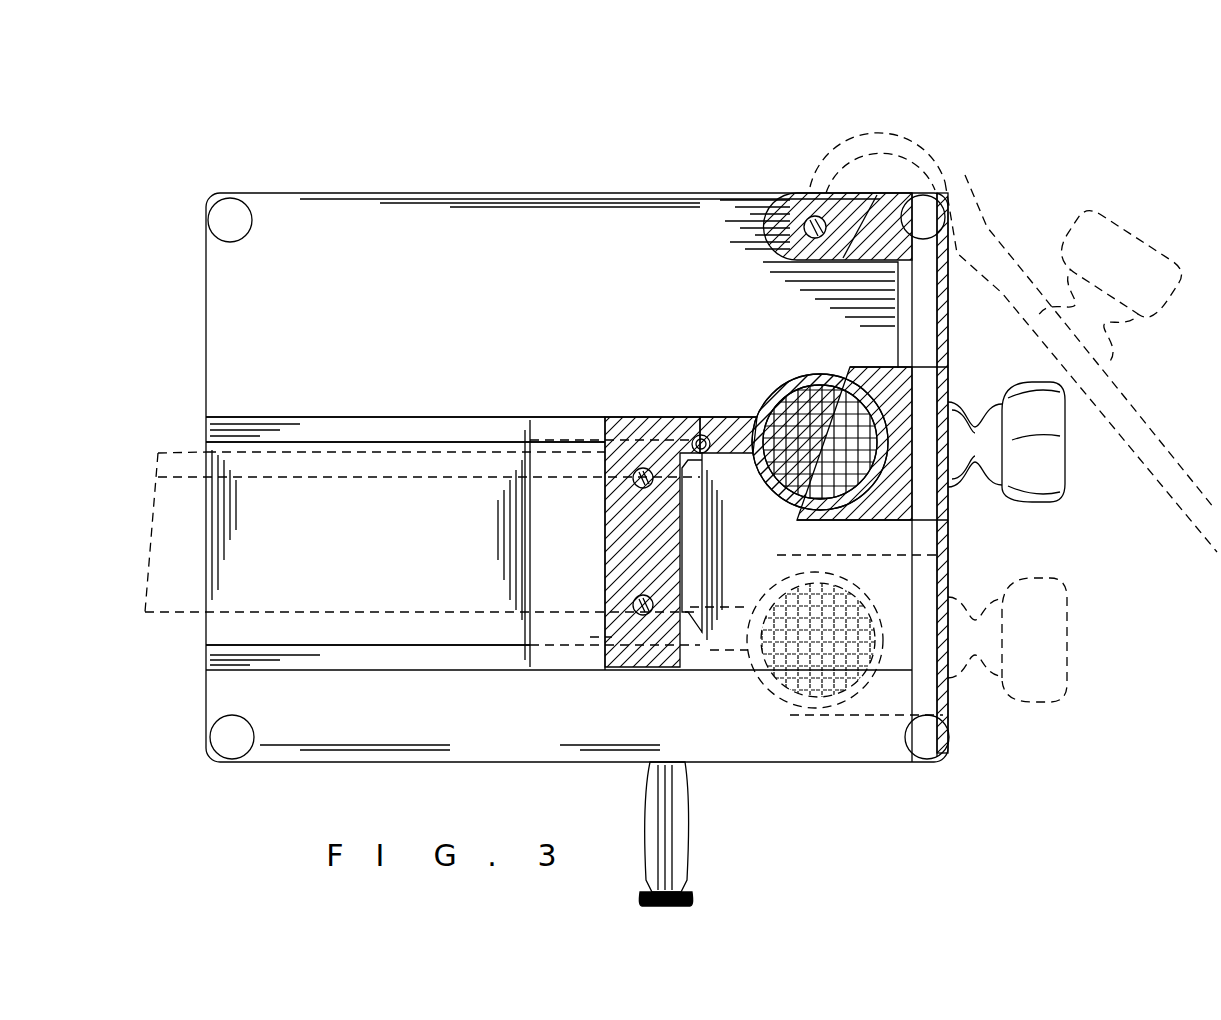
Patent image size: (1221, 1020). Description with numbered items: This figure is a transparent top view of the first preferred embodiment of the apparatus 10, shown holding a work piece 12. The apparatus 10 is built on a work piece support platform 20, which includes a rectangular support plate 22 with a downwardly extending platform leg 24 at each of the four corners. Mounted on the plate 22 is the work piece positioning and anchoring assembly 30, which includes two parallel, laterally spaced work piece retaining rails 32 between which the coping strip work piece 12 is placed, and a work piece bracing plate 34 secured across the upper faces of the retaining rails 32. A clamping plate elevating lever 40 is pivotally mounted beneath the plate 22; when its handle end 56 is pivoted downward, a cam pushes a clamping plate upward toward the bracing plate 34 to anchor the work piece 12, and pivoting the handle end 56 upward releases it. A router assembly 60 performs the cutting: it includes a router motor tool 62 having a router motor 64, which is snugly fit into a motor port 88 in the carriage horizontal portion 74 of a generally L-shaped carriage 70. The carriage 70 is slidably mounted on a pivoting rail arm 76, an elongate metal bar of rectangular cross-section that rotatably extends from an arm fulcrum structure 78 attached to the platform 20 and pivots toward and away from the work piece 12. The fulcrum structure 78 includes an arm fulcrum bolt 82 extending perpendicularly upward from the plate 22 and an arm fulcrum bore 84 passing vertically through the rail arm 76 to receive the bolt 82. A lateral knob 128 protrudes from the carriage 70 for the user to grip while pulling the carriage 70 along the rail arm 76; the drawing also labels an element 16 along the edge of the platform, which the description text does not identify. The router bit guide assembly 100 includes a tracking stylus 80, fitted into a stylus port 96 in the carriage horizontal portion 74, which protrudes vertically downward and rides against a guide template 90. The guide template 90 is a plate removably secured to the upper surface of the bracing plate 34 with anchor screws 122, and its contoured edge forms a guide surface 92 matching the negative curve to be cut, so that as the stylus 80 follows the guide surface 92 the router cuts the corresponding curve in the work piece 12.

The apparatus 10 is at (1125, 142).
The work piece 12 is at (313, 583).
The guide rail 16 is at (930, 600).
The work piece support platform 20 is at (430, 268).
The support plate 22 is at (578, 283).
The platform leg 24 is at (240, 200).
The work piece positioning and anchoring assembly 30 is at (543, 118).
The work piece retaining rails 32 is at (335, 417).
The work piece bracing plate 34 is at (547, 582).
The clamping plate elevating lever 40 is at (646, 835).
The handle end 56 is at (688, 857).
The router assembly 60 is at (748, 345).
The router motor tool 62 is at (860, 363).
The router motor 64 is at (875, 372).
The carriage 70 is at (1058, 382).
The carriage horizontal portion 74 is at (813, 370).
The pivoting rail arm 76 is at (1152, 444).
The arm fulcrum structure 78 is at (779, 130).
The tracking stylus 80 is at (698, 420).
The arm fulcrum bolt 82 is at (815, 216).
The arm fulcrum bore 84 is at (785, 212).
The motor port 88 is at (940, 545).
The guide template 90 is at (663, 463).
The guide surface 92 is at (700, 615).
The stylus port 96 is at (702, 435).
The router bit guide assembly 100 is at (688, 126).
The anchor screws 122 is at (612, 490).
The lateral knob 128 is at (1140, 240).